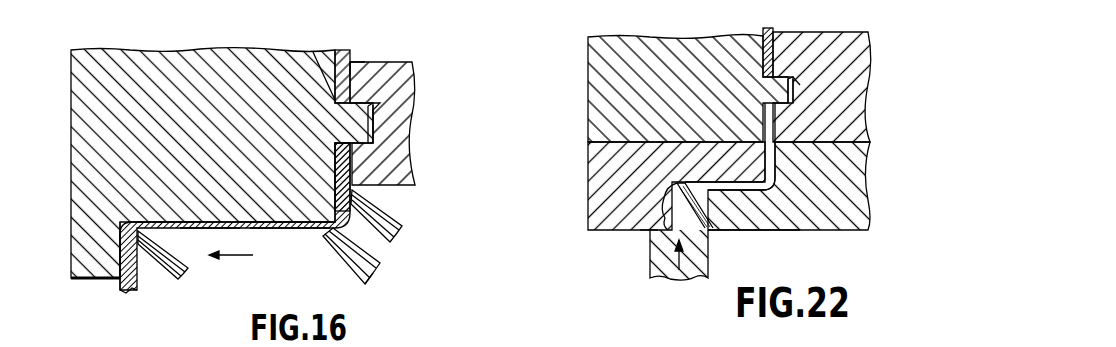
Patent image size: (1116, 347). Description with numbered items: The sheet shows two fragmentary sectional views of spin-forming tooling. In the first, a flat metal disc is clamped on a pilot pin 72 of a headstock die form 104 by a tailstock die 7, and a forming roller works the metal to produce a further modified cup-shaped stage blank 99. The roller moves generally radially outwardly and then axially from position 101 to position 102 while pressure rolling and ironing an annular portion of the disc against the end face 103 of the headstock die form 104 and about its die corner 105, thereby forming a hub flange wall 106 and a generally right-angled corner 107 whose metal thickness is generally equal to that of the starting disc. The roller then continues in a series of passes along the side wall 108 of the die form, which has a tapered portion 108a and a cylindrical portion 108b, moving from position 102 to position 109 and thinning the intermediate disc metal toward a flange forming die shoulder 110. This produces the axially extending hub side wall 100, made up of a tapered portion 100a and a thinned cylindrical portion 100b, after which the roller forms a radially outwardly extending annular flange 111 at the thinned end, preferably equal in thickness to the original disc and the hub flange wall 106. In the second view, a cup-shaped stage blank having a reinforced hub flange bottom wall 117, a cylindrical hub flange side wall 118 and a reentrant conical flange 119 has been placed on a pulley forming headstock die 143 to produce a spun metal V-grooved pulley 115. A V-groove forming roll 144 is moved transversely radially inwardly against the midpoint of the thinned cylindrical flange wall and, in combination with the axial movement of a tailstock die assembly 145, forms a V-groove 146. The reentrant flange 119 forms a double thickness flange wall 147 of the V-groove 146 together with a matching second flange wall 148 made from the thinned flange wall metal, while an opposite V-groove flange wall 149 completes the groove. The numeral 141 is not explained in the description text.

In FIG. 16, the headstock die form 104 is at (185, 68).
In FIG. 16, the end face of headstock die form 103 is at (315, 50).
In FIG. 16, the hub flange wall 106 is at (352, 62).
In FIG. 16, the tailstock die 7 is at (405, 62).
In FIG. 16, the pilot pin 72 is at (368, 125).
In FIG. 16, the cup-shaped stage blank 99 is at (352, 157).
In FIG. 16, the die corner 105 is at (335, 185).
In FIG. 16, the side wall of headstock die form 108 is at (214, 222).
In FIG. 16, the tapered portion of die side wall 108a is at (283, 222).
In FIG. 16, the cylindrical portion of die side wall 108b is at (159, 222).
In FIG. 16, the roller position 109 is at (188, 282).
In FIG. 16, the annular flange 111 is at (139, 267).
In FIG. 16, the flange forming die shoulder 110 is at (118, 280).
In FIG. 16, the roller position 101 is at (375, 212).
In FIG. 16, the right-angled corner 107 is at (386, 258).
In FIG. 16, the roller position 102 is at (369, 286).
In FIG. 16, the hub side wall 100 is at (265, 230).
In FIG. 16, the tapered portion of side wall 100a is at (302, 232).
In FIG. 16, the thinned cylindrical portion of side wall 100b is at (198, 233).
In FIG. 22, the pulley forming headstock die 143 is at (621, 97).
In FIG. 22, the spun metal V-grooved pulley 115 is at (760, 30).
In FIG. 22, the reinforced hub flange bottom wall 117 is at (773, 60).
In FIG. 22, the tailstock die assembly 145 is at (832, 80).
In FIG. 22, the V-groove 146 is at (668, 202).
In FIG. 22, the second flange wall 148 is at (677, 190).
In FIG. 22, the opposite V-groove flange wall 149 is at (660, 207).
In FIG. 22, the block corner 141 is at (648, 232).
In FIG. 22, the V-groove forming roll 144 is at (652, 272).
In FIG. 22, the double thickness flange wall 147 is at (708, 255).
In FIG. 22, the cylindrical hub flange side wall 118 is at (760, 192).
In FIG. 22, the reentrant conical flange 119 is at (750, 230).